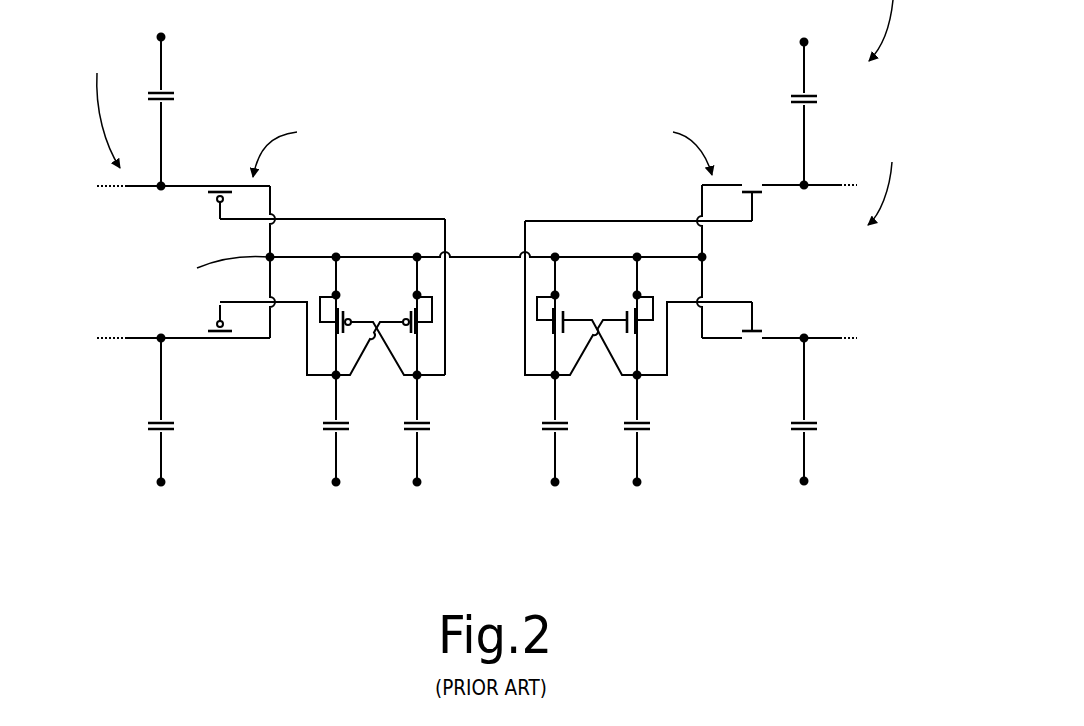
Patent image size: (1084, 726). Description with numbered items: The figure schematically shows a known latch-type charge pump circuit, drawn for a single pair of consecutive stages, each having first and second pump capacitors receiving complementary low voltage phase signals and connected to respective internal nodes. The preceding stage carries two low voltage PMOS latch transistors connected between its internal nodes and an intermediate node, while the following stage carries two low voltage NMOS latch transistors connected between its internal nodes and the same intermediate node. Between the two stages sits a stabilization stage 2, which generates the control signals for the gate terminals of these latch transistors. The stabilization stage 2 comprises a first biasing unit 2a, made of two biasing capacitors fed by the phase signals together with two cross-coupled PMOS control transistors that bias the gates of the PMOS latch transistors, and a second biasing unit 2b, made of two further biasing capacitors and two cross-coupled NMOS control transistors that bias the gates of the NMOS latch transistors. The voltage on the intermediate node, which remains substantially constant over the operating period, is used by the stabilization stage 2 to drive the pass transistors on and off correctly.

The stabilization stage 2 is at (464, 473).
The first biasing unit 2a is at (363, 500).
The second biasing unit 2b is at (603, 503).